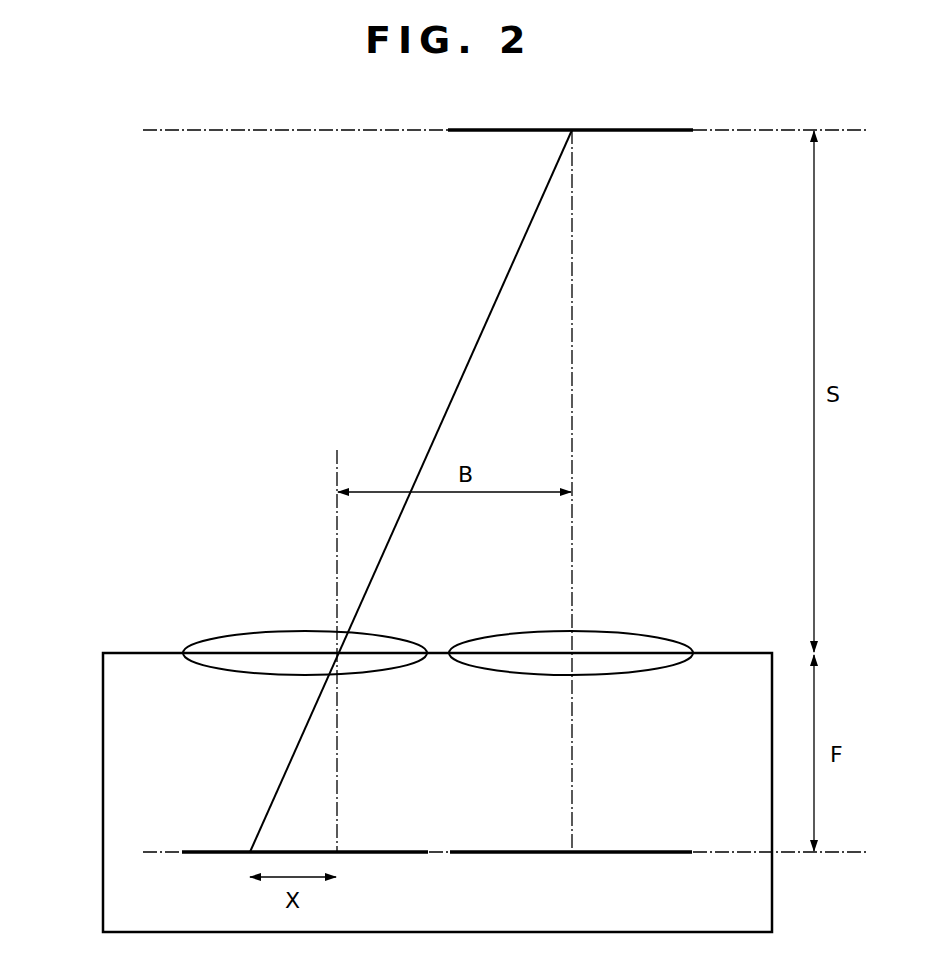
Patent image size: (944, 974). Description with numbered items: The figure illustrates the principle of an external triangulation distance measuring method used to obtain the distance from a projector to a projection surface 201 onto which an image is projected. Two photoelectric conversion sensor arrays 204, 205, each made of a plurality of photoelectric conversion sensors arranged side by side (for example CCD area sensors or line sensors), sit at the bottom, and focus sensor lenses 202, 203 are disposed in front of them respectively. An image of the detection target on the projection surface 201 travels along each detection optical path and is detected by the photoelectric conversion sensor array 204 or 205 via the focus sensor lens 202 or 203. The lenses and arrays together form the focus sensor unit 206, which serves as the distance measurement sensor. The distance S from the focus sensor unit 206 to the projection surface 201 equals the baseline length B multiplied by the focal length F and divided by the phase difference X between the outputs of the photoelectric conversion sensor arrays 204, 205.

The projection surface 201 is at (655, 128).
The focus sensor lens 202 is at (222, 634).
The focus sensor lens 203 is at (657, 634).
The photoelectric conversion sensor array 204 is at (211, 855).
The photoelectric conversion sensor array 205 is at (546, 855).
The focus sensor unit 206 is at (102, 670).